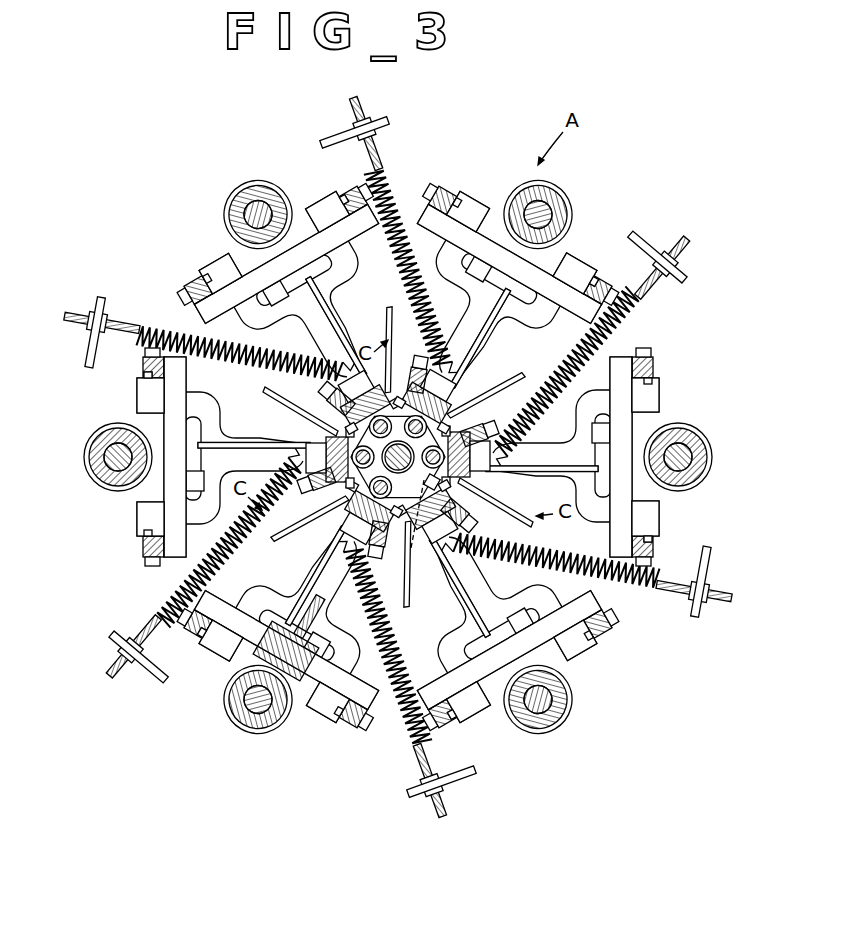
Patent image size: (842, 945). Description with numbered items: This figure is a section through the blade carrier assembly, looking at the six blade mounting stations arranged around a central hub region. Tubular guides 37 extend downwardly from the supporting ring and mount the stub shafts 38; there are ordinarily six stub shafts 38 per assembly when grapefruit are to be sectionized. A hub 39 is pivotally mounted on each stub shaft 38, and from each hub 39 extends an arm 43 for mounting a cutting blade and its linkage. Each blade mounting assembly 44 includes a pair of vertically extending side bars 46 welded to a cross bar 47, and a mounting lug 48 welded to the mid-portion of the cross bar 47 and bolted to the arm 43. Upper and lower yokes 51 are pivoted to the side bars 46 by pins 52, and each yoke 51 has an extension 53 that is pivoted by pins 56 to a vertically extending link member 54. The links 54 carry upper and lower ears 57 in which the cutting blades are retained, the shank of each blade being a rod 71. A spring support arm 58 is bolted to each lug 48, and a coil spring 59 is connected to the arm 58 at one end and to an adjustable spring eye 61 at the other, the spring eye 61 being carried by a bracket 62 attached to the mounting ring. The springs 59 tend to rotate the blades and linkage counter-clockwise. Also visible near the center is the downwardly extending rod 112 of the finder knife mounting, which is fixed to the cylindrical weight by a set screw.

The tubular guide 37 is at (565, 200).
The stub shaft 38 is at (546, 215).
The hub 39 is at (566, 184).
The arm 43 is at (262, 255).
The blade mounting assembly 44 is at (318, 166).
The side bar 46 is at (470, 195).
The cross bar 47 is at (440, 207).
The mounting lug 48 is at (298, 642).
The yoke 51 is at (478, 208).
The pin 52 is at (437, 180).
The extension 53 is at (330, 305).
The link member 54 is at (412, 386).
The pin 56 is at (346, 396).
The ear 57 is at (340, 418).
The spring support arm 58 is at (335, 318).
The coil spring 59 is at (522, 378).
The adjustable spring eye 61 is at (378, 103).
The bracket 62 is at (385, 126).
The rod 71 is at (436, 486).
The rod 112 is at (410, 544).